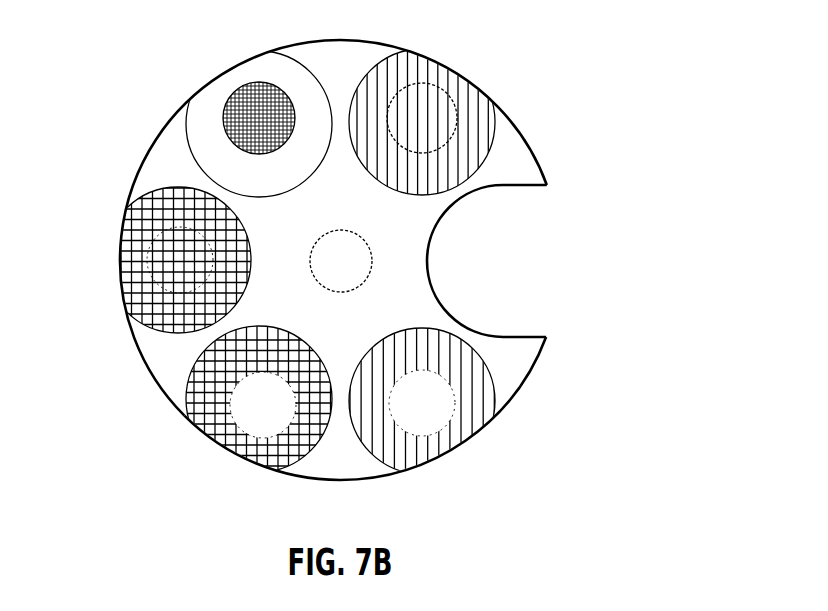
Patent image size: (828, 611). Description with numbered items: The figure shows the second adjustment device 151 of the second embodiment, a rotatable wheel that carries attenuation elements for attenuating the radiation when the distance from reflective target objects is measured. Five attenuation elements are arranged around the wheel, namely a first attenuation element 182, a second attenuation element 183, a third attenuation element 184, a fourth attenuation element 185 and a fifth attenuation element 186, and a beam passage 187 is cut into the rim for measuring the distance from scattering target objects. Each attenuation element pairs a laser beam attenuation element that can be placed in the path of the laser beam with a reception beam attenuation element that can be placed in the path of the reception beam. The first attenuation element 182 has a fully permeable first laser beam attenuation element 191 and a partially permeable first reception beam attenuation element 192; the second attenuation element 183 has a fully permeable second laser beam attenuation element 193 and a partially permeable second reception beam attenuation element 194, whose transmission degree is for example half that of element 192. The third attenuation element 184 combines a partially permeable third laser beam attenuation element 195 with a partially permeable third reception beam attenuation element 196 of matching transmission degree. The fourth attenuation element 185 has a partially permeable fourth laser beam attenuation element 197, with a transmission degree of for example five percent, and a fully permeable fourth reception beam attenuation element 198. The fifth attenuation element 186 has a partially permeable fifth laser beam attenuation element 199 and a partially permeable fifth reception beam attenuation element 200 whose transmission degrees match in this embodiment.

The second adjustment device 151 is at (643, 135).
The first attenuation element 182 is at (465, 465).
The second attenuation element 183 is at (235, 462).
The third attenuation element 184 is at (106, 220).
The fourth attenuation element 185 is at (212, 82).
The fifth attenuation element 186 is at (475, 80).
The beam passage 187 is at (512, 265).
The first laser beam attenuation element 191 is at (415, 380).
The first reception beam attenuation element 192 is at (472, 414).
The second laser beam attenuation element 193 is at (268, 380).
The second reception beam attenuation element 194 is at (188, 415).
The third laser beam attenuation element 195 is at (240, 267).
The third reception beam attenuation element 196 is at (118, 272).
The fourth laser beam attenuation element 197 is at (273, 150).
The fourth reception beam attenuation element 198 is at (208, 117).
The fifth laser beam attenuation element 199 is at (415, 158).
The fifth reception beam attenuation element 200 is at (480, 118).